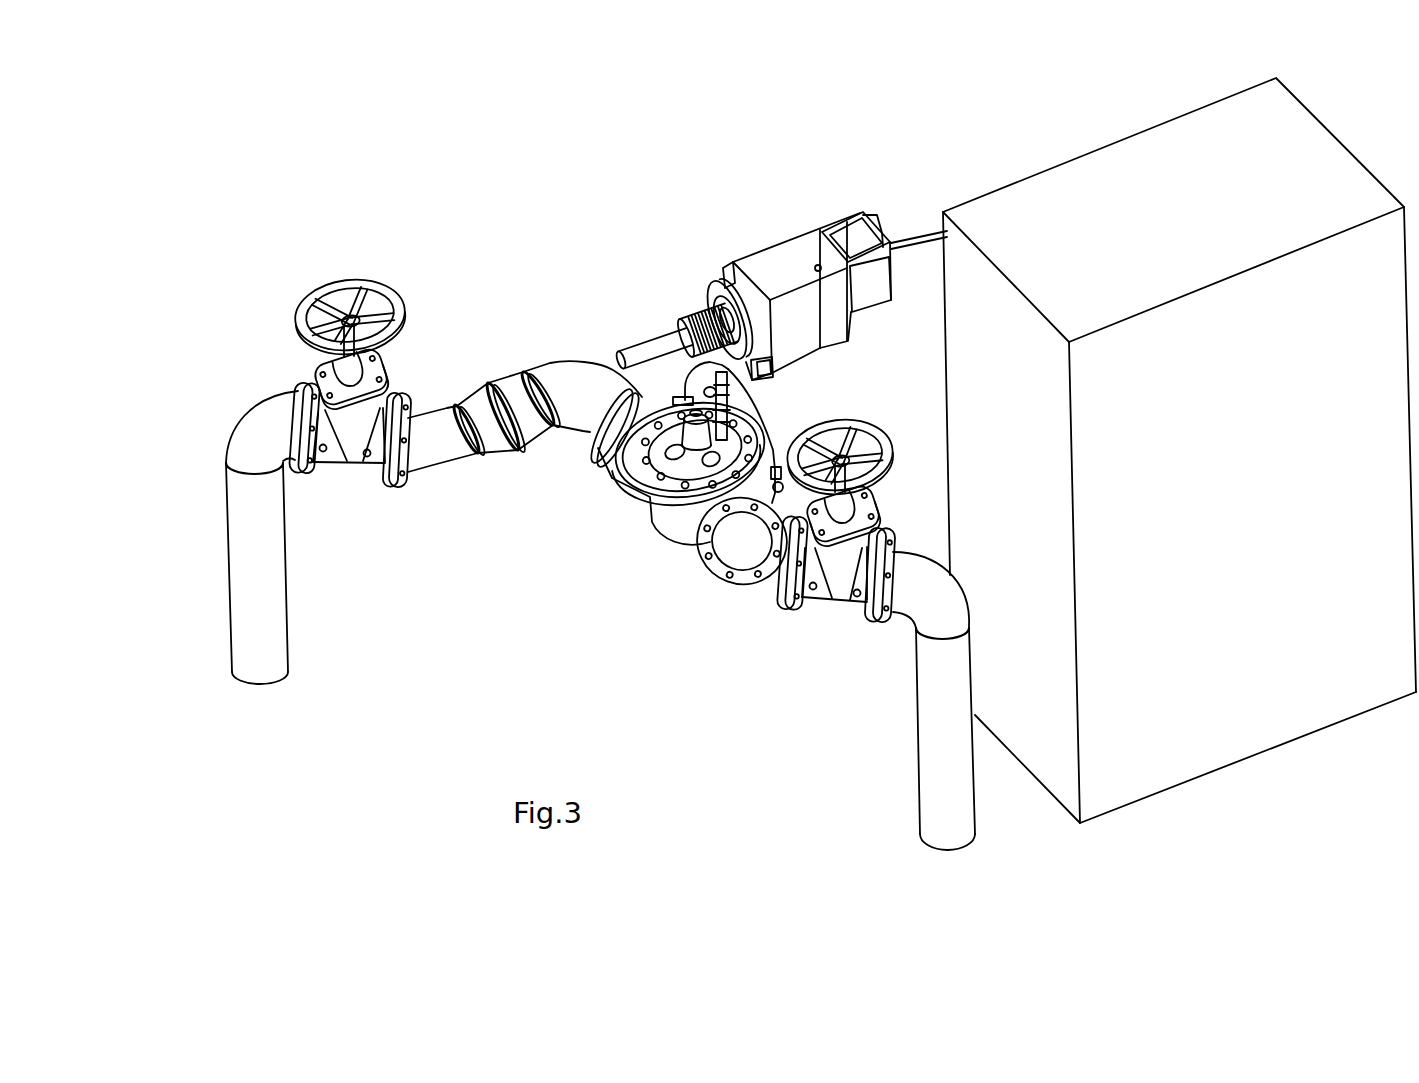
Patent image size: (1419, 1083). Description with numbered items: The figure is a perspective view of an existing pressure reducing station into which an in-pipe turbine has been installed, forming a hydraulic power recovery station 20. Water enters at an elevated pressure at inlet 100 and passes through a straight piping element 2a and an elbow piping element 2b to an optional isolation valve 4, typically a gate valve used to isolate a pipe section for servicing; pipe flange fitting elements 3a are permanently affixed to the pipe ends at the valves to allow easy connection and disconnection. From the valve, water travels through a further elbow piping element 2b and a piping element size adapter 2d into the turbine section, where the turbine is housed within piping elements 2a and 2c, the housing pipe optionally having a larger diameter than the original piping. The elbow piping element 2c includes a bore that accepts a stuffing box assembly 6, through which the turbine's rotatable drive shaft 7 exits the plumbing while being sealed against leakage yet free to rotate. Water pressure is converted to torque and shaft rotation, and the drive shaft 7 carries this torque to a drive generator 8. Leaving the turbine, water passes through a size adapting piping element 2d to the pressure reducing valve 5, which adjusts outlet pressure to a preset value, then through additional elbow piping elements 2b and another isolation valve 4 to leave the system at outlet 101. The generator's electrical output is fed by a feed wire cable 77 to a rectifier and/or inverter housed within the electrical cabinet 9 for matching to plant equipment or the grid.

The straight piping element 2a is at (507, 373).
The elbow piping element 2b is at (430, 412).
The elbow piping element 2c is at (563, 435).
The piping element size adapter 2d is at (470, 396).
The pipe flange fitting element 3a is at (298, 383).
The isolation valve 4 is at (370, 465).
The pressure reducing valve 5 is at (667, 545).
The stuffing box assembly 6 is at (613, 363).
The rotatable drive shaft 7 is at (679, 335).
The drive generator 8 is at (752, 253).
The feed wire cable 77 is at (918, 236).
The electrical cabinet 9 is at (1043, 172).
The hydraulic power recovery station 20 is at (515, 705).
The inlet 100 is at (260, 700).
The outlet 101 is at (947, 862).